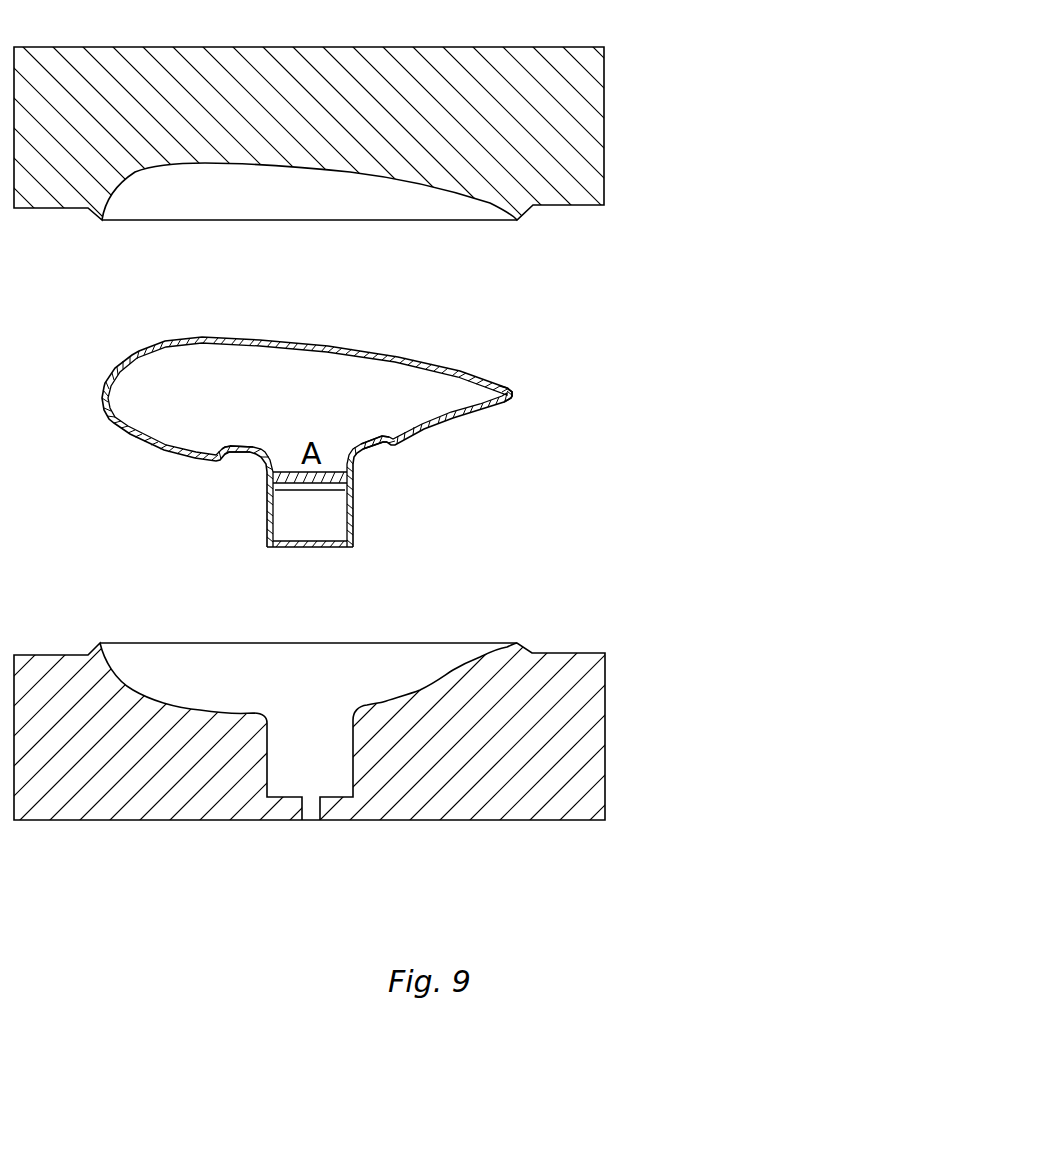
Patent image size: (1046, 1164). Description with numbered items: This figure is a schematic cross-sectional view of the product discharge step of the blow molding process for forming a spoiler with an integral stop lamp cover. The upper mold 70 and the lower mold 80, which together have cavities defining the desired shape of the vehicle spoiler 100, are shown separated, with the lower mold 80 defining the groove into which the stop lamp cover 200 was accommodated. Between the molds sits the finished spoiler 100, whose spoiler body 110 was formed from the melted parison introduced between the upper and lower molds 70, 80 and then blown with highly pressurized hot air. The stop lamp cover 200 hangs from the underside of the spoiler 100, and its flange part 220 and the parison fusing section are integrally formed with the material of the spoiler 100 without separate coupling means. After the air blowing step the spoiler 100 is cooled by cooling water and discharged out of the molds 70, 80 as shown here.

The upper mold 70 is at (587, 125).
The lower mold 80 is at (600, 740).
The spoiler 100 is at (425, 353).
The spoiler body 110 is at (515, 393).
The stop lamp cover 200 is at (361, 522).
The flange part 220 is at (233, 467).